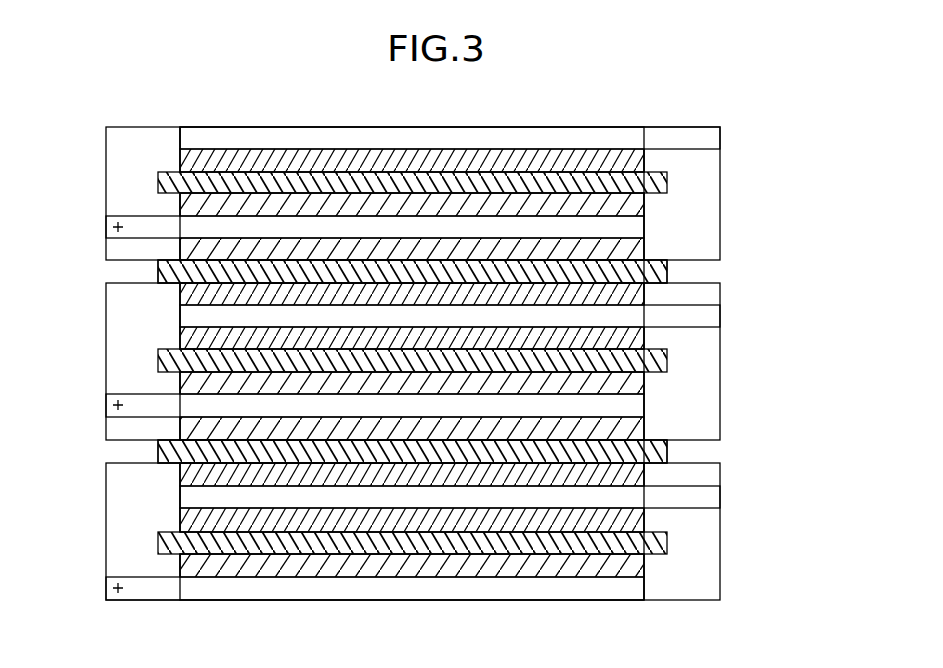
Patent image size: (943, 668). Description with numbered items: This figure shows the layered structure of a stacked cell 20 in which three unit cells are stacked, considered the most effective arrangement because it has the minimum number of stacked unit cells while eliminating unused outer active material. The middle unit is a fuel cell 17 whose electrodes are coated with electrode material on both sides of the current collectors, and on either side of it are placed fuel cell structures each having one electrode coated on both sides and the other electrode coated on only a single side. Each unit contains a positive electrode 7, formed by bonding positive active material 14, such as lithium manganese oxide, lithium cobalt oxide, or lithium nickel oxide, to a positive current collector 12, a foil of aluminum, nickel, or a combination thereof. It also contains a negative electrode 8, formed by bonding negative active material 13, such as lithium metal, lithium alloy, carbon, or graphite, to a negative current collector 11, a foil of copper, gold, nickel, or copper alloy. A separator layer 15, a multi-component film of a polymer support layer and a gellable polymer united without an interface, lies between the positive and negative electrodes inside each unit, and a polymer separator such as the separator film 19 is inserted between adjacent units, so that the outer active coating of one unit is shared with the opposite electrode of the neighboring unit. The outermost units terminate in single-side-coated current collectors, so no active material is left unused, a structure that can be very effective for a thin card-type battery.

The stacked cell 20 is at (765, 422).
The fuel cell 17 is at (93, 125).
The positive electrode 7 is at (714, 197).
The negative electrode 8 is at (789, 118).
The negative current collector 11 is at (695, 141).
The positive current collector 12 is at (637, 228).
The negative active material 13 is at (645, 164).
The positive active material 14 is at (640, 210).
The separator layer 15 is at (667, 181).
The separator film 19 is at (158, 271).